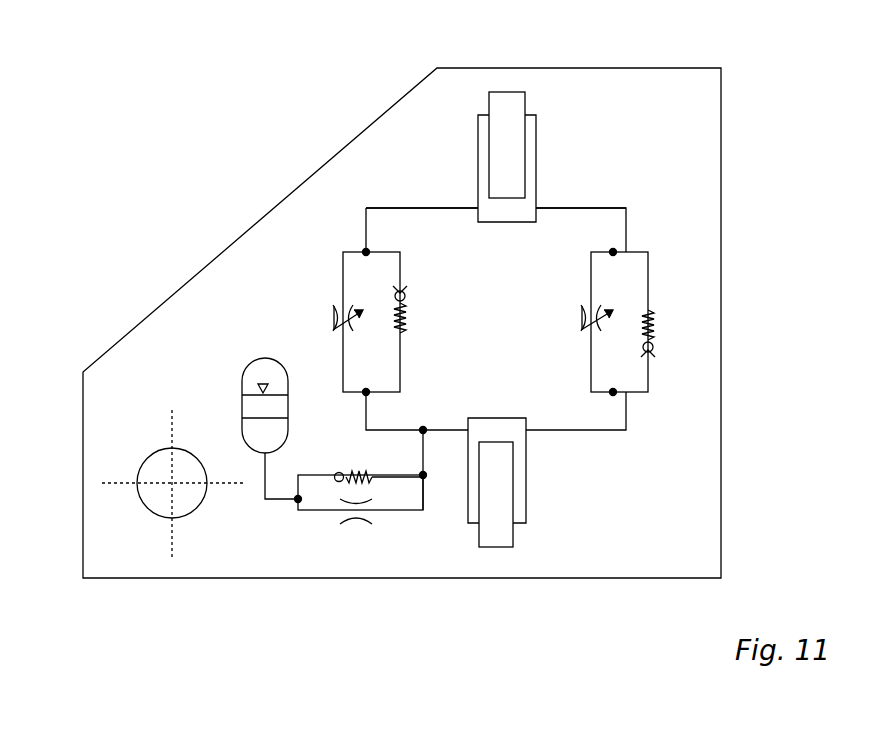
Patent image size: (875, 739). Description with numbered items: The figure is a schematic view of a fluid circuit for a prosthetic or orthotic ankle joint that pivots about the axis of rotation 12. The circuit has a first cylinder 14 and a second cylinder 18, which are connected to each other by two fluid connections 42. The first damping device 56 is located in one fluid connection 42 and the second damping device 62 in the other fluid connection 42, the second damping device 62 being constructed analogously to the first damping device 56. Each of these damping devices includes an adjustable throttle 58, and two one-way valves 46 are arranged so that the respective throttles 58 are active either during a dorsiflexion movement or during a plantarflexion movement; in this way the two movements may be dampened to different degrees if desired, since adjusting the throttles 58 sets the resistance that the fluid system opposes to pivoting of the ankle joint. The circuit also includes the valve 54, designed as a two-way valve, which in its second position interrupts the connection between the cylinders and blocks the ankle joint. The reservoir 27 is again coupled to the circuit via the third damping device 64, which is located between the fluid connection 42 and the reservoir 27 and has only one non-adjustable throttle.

The axis of rotation 12 is at (168, 486).
The reservoir 27 is at (245, 371).
The third damping device 64 is at (343, 532).
The second damping device 62 is at (322, 285).
The one-way valve 46 is at (405, 310).
The adjustable throttle 58 is at (338, 318).
The second cylinder 18 is at (490, 212).
The fluid connection 42 is at (372, 208).
The first damping device 56 is at (672, 292).
The valve 54 is at (580, 322).
The first cylinder 14 is at (473, 432).